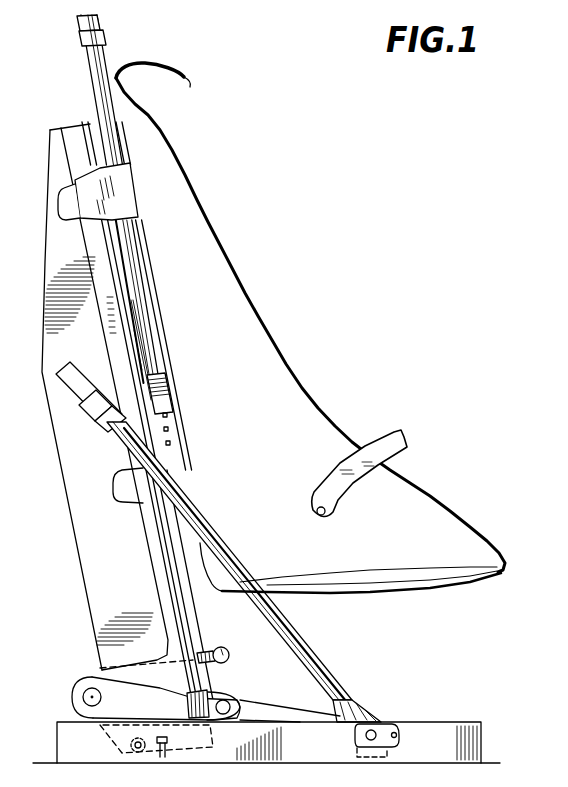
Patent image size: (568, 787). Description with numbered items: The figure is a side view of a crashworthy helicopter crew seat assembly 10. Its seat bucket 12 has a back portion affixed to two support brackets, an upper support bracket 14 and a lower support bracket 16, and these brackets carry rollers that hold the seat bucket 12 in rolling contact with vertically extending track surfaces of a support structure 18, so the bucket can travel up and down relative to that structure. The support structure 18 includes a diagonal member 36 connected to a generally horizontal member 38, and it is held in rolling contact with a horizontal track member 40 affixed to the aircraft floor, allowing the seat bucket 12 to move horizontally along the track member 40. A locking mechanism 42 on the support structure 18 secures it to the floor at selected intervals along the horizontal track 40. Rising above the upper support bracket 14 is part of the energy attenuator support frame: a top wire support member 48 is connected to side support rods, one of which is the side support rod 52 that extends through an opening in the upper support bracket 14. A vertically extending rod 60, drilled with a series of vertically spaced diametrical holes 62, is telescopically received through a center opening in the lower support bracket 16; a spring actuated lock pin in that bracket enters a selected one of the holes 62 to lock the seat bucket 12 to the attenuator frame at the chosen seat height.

The crashworthy helicopter crew seat assembly 10 is at (272, 345).
The seat bucket 12 is at (321, 428).
The upper support bracket 14 is at (123, 195).
The lower support bracket 16 is at (175, 466).
The support structure 18 is at (93, 570).
The diagonal member 36 is at (319, 653).
The horizontal member 38 is at (285, 678).
The horizontal track member 40 is at (441, 737).
The locking mechanism 42 is at (232, 622).
The top wire support member 48 is at (98, 19).
The side support rod 52 is at (92, 65).
The vertically extending rod 60 is at (168, 412).
The diametrical holes 62 is at (172, 442).